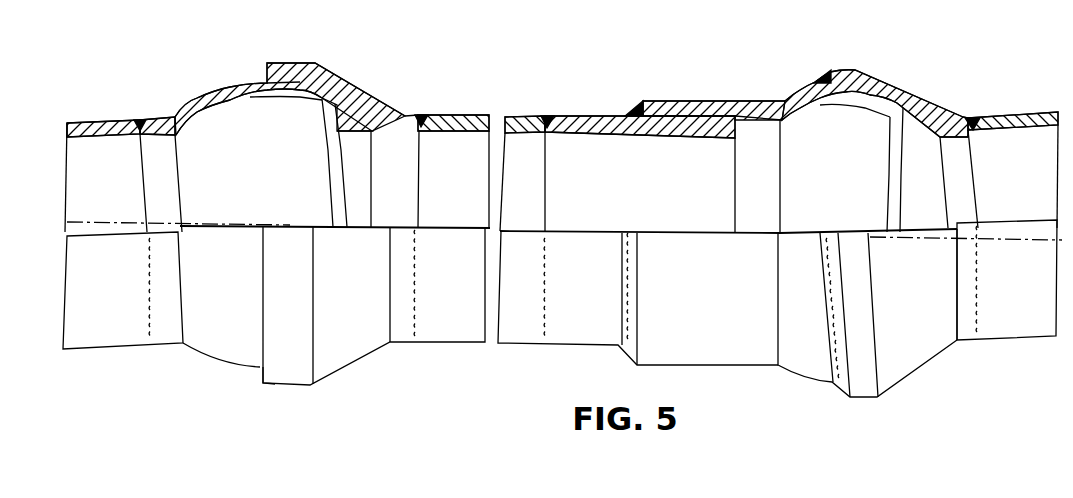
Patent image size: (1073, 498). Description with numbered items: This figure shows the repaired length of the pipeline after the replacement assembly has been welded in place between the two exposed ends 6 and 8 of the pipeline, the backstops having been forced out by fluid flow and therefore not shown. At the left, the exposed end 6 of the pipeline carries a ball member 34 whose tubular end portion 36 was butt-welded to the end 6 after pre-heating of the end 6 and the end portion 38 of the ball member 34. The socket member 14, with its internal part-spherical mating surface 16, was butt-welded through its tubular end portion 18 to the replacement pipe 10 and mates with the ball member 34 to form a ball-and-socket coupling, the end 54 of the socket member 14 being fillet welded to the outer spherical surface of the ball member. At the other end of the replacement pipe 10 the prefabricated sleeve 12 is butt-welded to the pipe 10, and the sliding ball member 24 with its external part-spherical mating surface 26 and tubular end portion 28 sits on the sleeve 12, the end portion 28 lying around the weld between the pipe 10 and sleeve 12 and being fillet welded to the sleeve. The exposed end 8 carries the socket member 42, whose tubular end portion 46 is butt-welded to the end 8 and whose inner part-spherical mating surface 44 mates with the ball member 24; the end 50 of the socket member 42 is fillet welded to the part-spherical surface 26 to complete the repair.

The exposed end of the pipeline 6 is at (103, 120).
The exposed end of the pipeline 8 is at (1003, 116).
The replacement pipe 10 is at (522, 116).
The sleeve 12 is at (577, 116).
The socket member 14 is at (350, 375).
The internal part-spherical mating surface 16 is at (359, 124).
The tubular end portion 18 is at (419, 114).
The ball member 24 is at (662, 145).
The external part-spherical mating surface 26 is at (795, 100).
The tubular end portion 28 is at (680, 100).
The ball member 34 is at (215, 370).
The tubular end portion 36 is at (217, 95).
The end portion 38 is at (155, 117).
The socket member 42 is at (916, 385).
The inner part-spherical mating surface 44 is at (931, 132).
The tubular end portion 46 is at (977, 343).
The end of the socket member 50 is at (820, 80).
The end of the socket member 54 is at (258, 379).